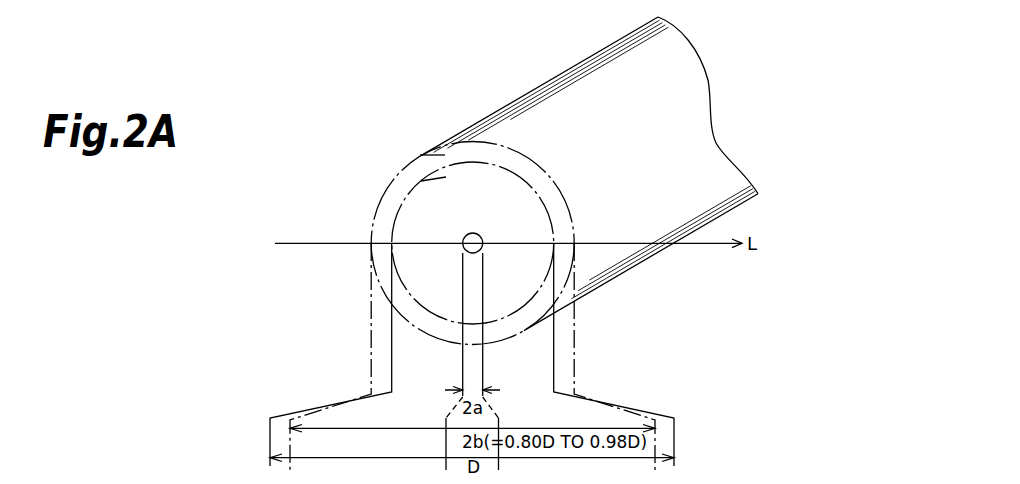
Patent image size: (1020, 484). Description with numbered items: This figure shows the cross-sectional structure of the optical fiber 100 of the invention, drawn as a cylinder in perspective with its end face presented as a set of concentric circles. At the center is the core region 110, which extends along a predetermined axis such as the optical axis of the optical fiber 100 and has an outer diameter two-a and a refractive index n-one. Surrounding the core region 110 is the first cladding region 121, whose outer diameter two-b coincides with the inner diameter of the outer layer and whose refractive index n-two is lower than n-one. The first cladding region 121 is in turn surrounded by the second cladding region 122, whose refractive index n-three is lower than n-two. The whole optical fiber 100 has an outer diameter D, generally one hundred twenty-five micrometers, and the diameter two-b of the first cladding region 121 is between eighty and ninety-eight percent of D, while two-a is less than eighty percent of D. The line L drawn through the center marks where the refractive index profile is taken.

The optical fiber 100 is at (663, 58).
The core region 110 is at (464, 237).
The first cladding region 121 is at (421, 181).
The second cladding region 122 is at (421, 155).